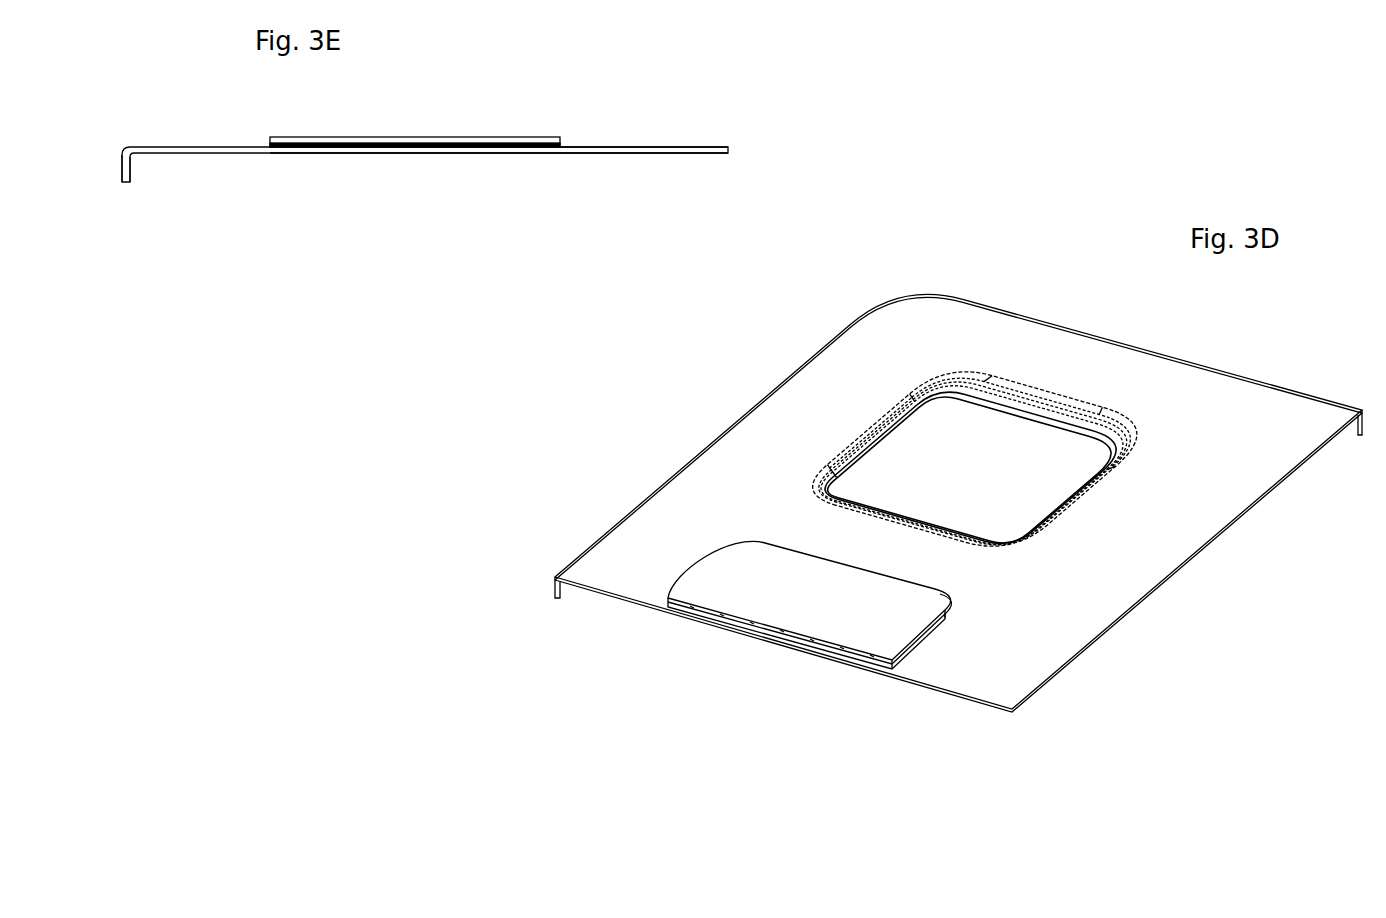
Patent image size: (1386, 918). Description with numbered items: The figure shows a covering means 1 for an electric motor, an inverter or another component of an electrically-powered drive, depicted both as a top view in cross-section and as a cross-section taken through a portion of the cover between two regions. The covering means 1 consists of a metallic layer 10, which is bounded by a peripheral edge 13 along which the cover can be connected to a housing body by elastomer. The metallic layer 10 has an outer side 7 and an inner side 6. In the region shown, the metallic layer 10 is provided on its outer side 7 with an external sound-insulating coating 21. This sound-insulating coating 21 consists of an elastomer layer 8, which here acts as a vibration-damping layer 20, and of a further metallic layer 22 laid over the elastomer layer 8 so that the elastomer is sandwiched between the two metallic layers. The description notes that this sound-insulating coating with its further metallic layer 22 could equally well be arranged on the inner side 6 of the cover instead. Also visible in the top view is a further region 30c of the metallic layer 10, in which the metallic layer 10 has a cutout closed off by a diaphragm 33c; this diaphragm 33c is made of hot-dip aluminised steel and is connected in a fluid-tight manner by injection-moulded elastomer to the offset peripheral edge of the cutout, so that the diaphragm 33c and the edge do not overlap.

In FIG. 3D, the covering means 1 is at (958, 480).
In FIG. 3E, the metallic layer 10 is at (177, 145).
In FIG. 3D, the metallic layer 10 is at (632, 540).
In FIG. 3E, the peripheral edge 13 is at (121, 184).
In FIG. 3D, the peripheral edge 13 is at (555, 600).
In FIG. 3E, the further metallic layer 22 is at (462, 133).
In FIG. 3D, the further metallic layer 22 is at (762, 567).
In FIG. 3E, the elastomer layer 8 is at (415, 196).
In FIG. 3D, the elastomer layer 8 is at (806, 684).
In FIG. 3E, the vibration-damping layer 20 is at (415, 196).
In FIG. 3D, the vibration-damping layer 20 is at (806, 684).
In FIG. 3E, the sound-insulating coating 21 is at (435, 148).
In FIG. 3D, the sound-insulating coating 21 is at (777, 632).
In FIG. 3E, the inner side 6 is at (633, 153).
In FIG. 3E, the outer side 7 is at (655, 145).
In FIG. 3D, the diaphragm 33c is at (996, 476).
In FIG. 3D, the region 30c is at (1053, 465).